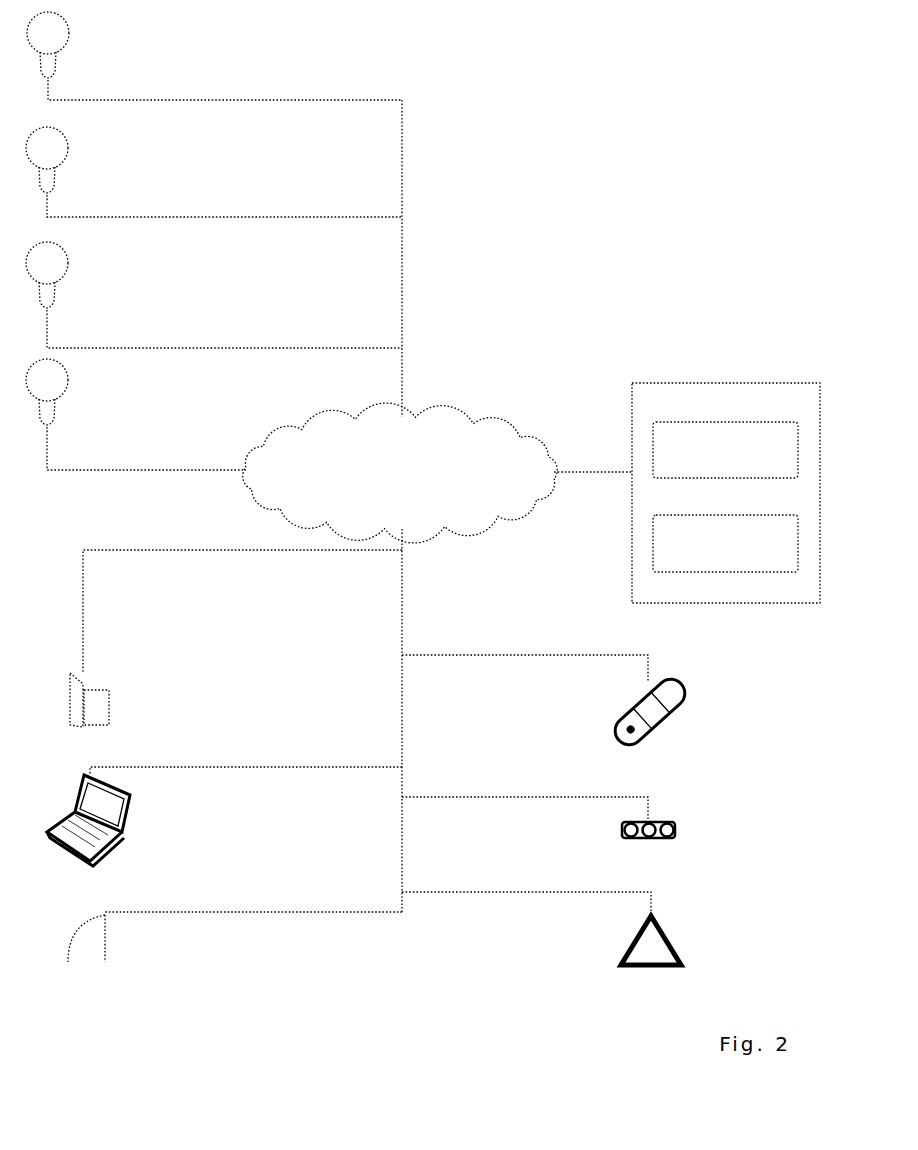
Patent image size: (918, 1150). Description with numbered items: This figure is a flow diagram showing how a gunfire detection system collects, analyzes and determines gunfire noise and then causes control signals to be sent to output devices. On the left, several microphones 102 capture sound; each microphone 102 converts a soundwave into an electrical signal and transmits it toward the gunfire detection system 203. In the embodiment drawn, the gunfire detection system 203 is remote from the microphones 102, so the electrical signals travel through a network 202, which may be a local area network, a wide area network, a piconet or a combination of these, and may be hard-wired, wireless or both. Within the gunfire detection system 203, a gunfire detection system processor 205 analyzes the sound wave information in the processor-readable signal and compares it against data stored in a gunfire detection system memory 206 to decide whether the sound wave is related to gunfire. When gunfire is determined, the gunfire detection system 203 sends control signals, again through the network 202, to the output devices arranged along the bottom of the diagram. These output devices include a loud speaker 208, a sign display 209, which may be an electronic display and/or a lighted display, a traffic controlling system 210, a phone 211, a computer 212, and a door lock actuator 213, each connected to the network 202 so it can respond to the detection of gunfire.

The microphone 102 is at (47, 218).
The network 202 is at (400, 473).
The gunfire detection system 203 is at (726, 493).
The gunfire detection system processor 205 is at (725, 450).
The gunfire detection system memory 206 is at (725, 543).
The loud speaker 208 is at (90, 708).
The sign display 209 is at (651, 953).
The traffic controlling system 210 is at (648, 843).
The phone 211 is at (649, 727).
The computer 212 is at (88, 830).
The door lock actuator 213 is at (88, 950).